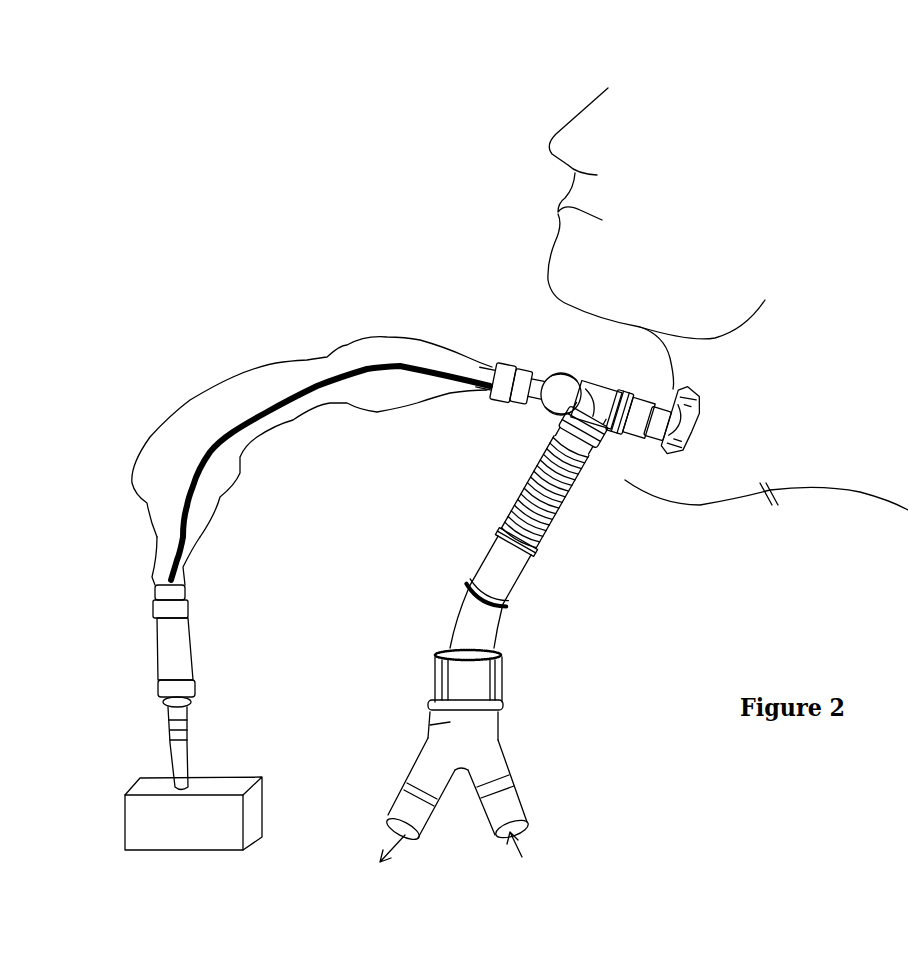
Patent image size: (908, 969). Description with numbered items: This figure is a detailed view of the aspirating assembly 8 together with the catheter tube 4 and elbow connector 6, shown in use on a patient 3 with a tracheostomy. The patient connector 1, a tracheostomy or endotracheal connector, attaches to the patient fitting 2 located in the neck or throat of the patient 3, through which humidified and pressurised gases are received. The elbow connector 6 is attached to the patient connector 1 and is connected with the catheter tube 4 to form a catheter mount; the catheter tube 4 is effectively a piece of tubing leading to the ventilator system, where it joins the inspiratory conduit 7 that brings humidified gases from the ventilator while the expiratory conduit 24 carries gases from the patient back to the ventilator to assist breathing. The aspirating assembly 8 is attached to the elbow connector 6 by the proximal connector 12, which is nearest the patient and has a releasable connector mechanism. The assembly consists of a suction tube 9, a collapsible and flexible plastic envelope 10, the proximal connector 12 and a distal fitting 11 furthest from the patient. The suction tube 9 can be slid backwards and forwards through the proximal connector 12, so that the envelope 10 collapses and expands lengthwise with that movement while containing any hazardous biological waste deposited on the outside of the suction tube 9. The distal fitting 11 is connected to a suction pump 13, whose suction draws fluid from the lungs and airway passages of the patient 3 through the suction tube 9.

The patient connector 1 is at (638, 410).
The patient fitting 2 is at (660, 448).
The patient 3 is at (590, 142).
The catheter tube 4 is at (525, 485).
The elbow connector 6 is at (600, 392).
The inspiratory conduit 7 is at (507, 803).
The aspirating assembly 8 is at (297, 325).
The suction tube 9 is at (250, 420).
The plastic envelope 10 is at (155, 437).
The distal fitting 11 is at (156, 730).
The proximal connector 12 is at (562, 376).
The suction pump 13 is at (122, 817).
The expiratory conduit 24 is at (397, 793).